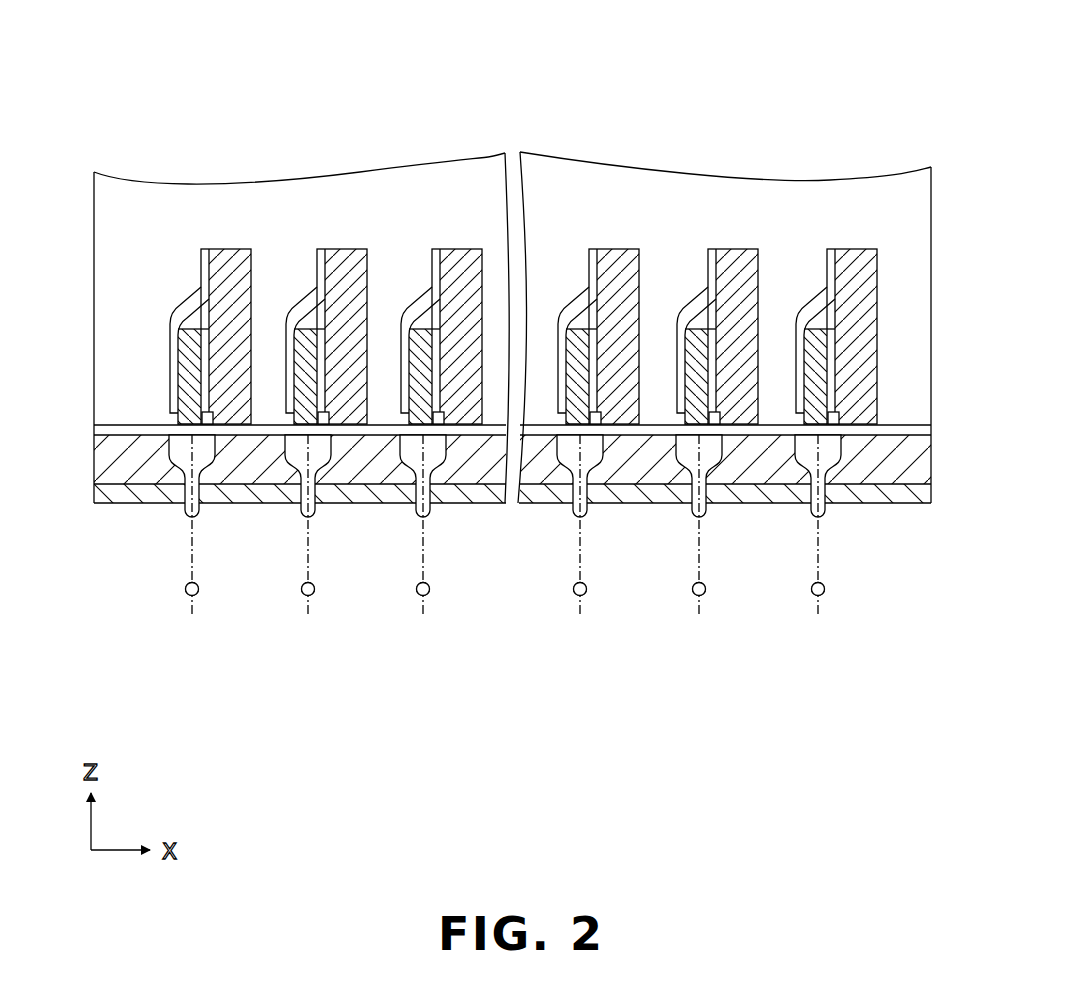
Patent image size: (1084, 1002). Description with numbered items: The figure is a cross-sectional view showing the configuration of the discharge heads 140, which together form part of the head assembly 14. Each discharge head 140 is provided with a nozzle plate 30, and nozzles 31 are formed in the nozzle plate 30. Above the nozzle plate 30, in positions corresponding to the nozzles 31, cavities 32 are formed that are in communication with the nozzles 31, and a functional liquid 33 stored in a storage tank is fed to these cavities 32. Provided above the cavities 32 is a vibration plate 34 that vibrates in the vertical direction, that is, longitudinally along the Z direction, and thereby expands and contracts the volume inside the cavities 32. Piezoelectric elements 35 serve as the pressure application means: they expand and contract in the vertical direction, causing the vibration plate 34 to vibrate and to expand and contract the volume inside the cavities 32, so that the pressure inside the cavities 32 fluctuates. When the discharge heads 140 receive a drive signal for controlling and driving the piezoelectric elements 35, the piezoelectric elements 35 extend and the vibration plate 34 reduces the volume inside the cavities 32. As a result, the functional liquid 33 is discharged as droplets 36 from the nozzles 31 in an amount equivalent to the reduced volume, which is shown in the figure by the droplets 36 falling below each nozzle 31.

The liquid ejecting head 14 is at (514, 348).
The discharge head 140 is at (717, 140).
The nozzle plate 30 is at (512, 508).
The nozzle 31 is at (420, 507).
The cavity 32 is at (201, 443).
The functional liquid 33 is at (177, 450).
The vibration plate 34 is at (918, 425).
The piezoelectric element 35 is at (197, 333).
The droplet 36 is at (188, 597).